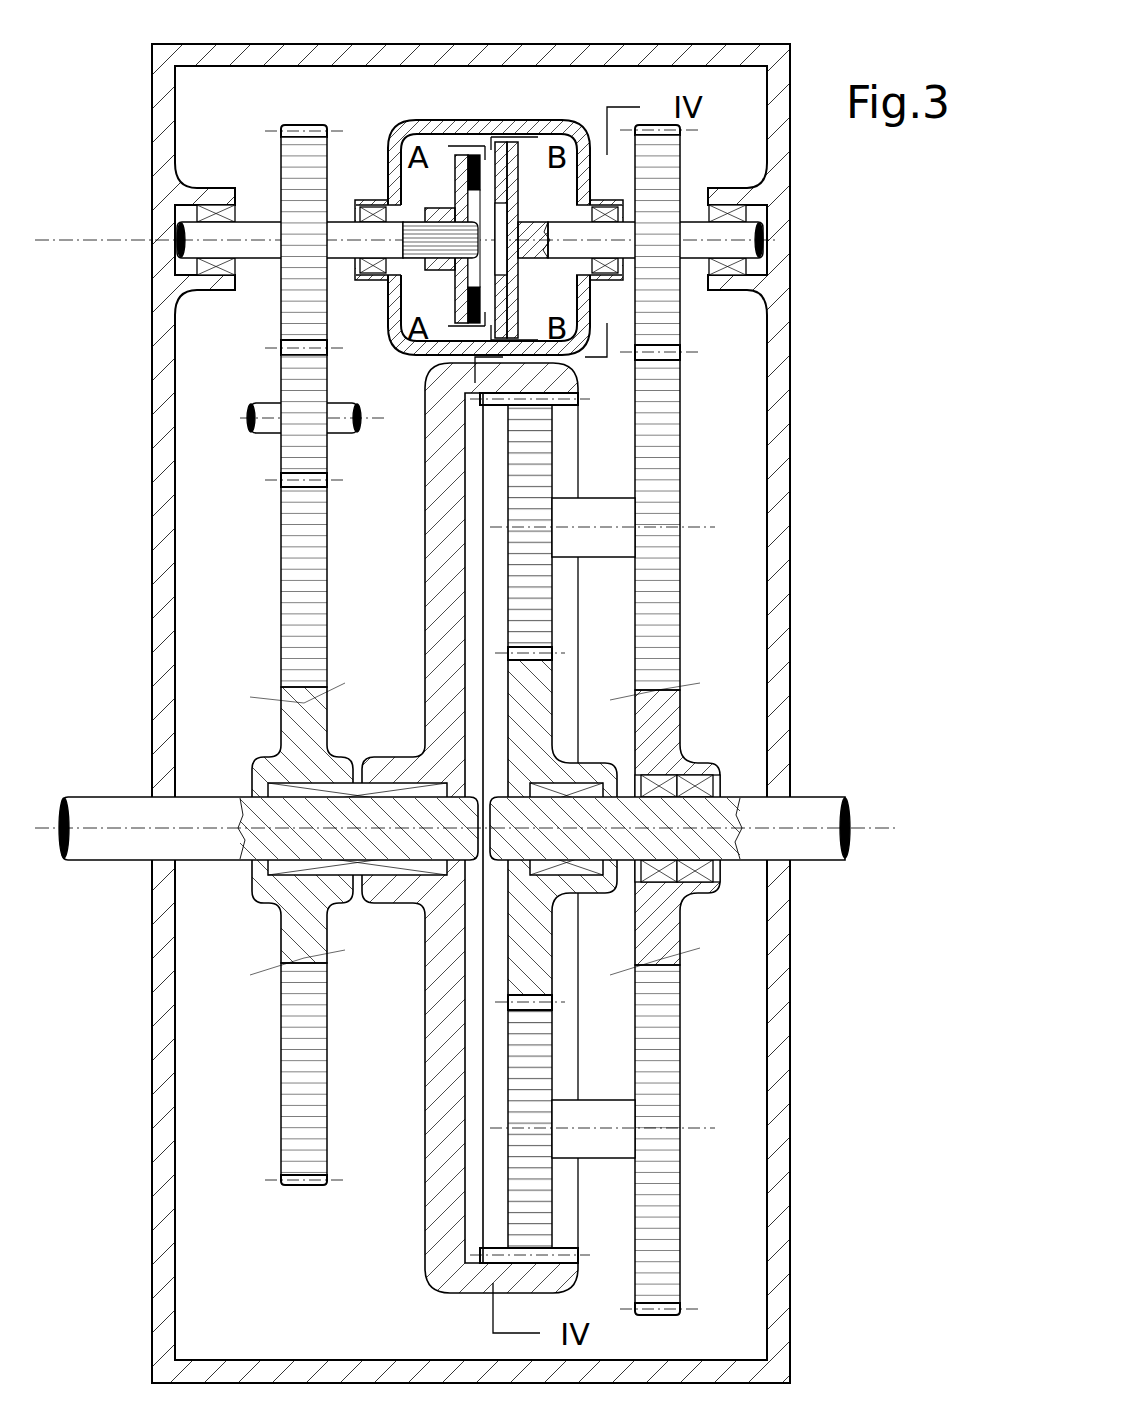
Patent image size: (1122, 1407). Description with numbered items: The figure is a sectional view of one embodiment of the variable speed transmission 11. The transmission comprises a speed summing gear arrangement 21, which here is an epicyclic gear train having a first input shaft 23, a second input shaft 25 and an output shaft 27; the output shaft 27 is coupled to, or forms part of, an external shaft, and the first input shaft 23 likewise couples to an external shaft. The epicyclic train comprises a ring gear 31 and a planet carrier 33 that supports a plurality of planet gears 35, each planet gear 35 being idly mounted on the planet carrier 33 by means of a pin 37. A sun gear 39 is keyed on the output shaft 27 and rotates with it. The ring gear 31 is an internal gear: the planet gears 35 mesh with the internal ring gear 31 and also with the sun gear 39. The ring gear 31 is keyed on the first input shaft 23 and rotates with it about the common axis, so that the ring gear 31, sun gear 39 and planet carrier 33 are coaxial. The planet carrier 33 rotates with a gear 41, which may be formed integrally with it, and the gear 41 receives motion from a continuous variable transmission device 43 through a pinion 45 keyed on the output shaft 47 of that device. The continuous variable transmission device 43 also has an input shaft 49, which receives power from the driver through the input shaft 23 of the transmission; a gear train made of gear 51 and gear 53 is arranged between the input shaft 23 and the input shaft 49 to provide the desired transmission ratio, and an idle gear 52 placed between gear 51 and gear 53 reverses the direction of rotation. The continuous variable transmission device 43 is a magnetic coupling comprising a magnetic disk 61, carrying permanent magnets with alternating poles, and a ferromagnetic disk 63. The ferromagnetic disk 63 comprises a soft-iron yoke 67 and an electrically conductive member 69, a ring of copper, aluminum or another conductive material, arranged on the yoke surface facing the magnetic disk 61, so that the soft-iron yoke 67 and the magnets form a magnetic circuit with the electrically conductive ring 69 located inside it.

The variable speed transmission 11 is at (836, 318).
The speed summing gear arrangement 21 is at (723, 442).
The first input shaft 23 is at (118, 814).
The second input shaft 25 is at (690, 768).
The output shaft 27 is at (818, 807).
The ring gear 31 is at (430, 550).
The planet carrier 33 is at (667, 1037).
The planet gear 35 is at (547, 437).
The pin 37 is at (597, 548).
The sun gear 39 is at (532, 940).
The gear 41 is at (650, 1313).
The continuous variable transmission device 43 is at (419, 104).
The pinion 45 is at (670, 305).
The output shaft 47 is at (690, 227).
The input shaft 49 is at (262, 248).
The gear 51 is at (287, 175).
The idle gear 52 is at (290, 382).
The gear 53 is at (293, 595).
The magnetic disk 61 is at (458, 193).
The ferromagnetic disk 63 is at (541, 193).
The soft-iron yoke 67 is at (511, 286).
The electrically conductive member 69 is at (492, 142).